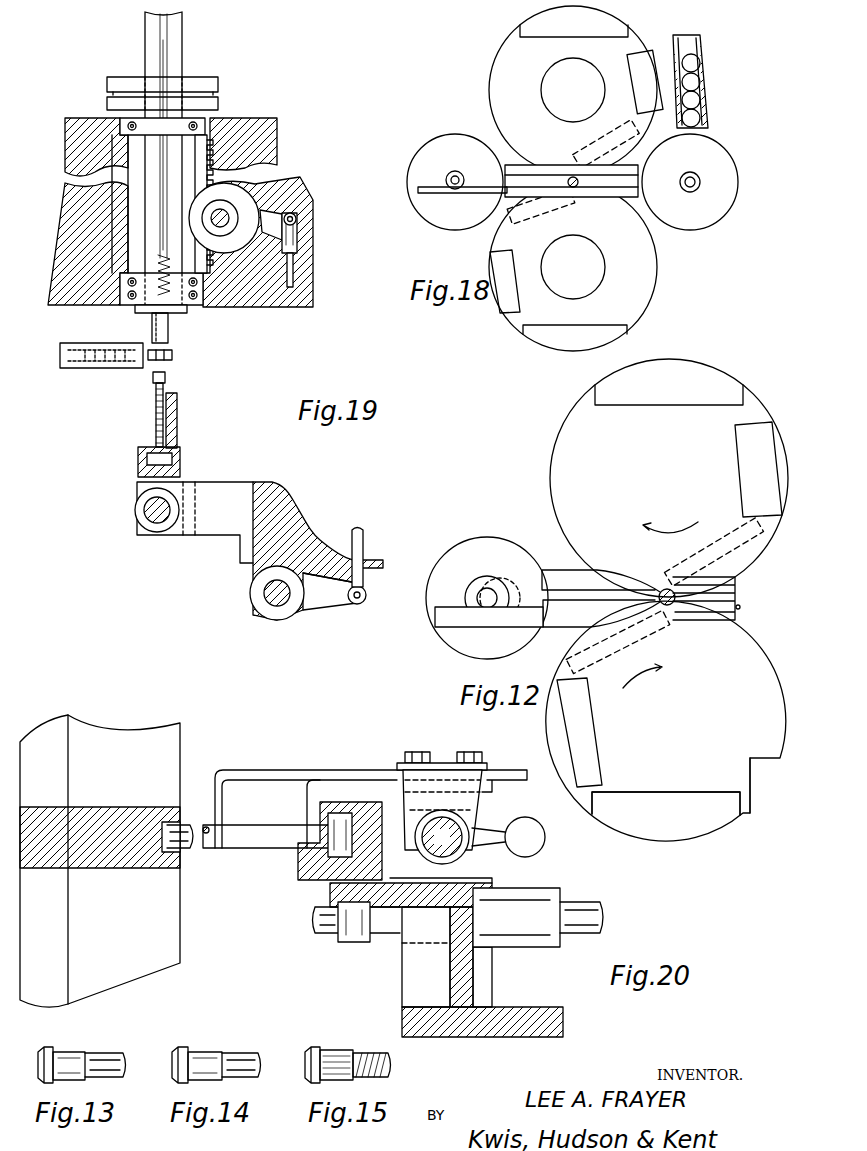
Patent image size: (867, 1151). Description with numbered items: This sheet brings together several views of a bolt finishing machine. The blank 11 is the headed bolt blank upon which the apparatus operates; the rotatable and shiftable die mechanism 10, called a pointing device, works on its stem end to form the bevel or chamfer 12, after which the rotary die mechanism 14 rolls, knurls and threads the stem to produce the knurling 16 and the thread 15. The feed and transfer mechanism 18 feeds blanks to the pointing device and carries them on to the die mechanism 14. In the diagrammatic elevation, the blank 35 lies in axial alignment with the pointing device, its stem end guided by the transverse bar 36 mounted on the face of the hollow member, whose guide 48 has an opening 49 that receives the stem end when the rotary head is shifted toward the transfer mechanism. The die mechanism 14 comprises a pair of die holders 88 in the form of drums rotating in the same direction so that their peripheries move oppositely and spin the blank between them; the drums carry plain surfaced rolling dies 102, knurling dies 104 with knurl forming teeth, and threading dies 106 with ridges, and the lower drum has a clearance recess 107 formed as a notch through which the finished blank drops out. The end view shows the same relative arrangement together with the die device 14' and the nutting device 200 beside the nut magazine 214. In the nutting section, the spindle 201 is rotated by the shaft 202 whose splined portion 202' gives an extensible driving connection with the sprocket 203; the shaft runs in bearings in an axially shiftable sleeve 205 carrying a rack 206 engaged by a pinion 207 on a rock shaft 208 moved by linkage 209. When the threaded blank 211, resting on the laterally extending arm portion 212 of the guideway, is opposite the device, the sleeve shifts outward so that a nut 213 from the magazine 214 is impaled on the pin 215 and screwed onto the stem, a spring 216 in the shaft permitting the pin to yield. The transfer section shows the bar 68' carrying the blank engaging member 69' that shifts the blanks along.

In FIG. 19, the splined portion 202' is at (231, 142).
In FIG. 19, the sprocket 203 is at (210, 84).
In FIG. 19, the rack 206 is at (210, 143).
In FIG. 19, the pinion 207 is at (222, 216).
In FIG. 19, the rock shaft 208 is at (262, 212).
In FIG. 19, the axially shiftable sleeve 205 is at (153, 238).
In FIG. 19, the shaft 202 is at (74, 204).
In FIG. 19, the nutting device 200 is at (57, 268).
In FIG. 18, the nutting device 200 is at (705, 147).
In FIG. 19, the magazine 214 is at (70, 345).
In FIG. 18, the magazine 214 is at (708, 78).
In FIG. 19, the spring 216 is at (122, 346).
In FIG. 19, the linkage 209 is at (293, 306).
In FIG. 19, the spindle 201 is at (168, 330).
In FIG. 19, the pin 215 is at (172, 355).
In FIG. 19, the nut 213 is at (165, 376).
In FIG. 19, the laterally extending arm portion 212 is at (177, 405).
In FIG. 19, the blank 211 is at (172, 426).
In FIG. 20, the blank 211 is at (280, 813).
In FIG. 19, the bar 68' is at (192, 493).
In FIG. 20, the bar 68' is at (480, 847).
In FIG. 18, the die device 14' is at (583, 178).
In FIG. 18, the die mechanism 10 is at (459, 127).
In FIG. 12, the die mechanism 10 is at (507, 537).
In FIG. 12, the rotary die mechanism 14 is at (658, 600).
In FIG. 20, the rotary die mechanism 14 is at (123, 861).
In FIG. 12, the die holders 88 is at (743, 387).
In FIG. 12, the knurling dies 104 is at (768, 430).
In FIG. 12, the rolling dies 102 is at (715, 551).
In FIG. 12, the blank 35 is at (667, 590).
In FIG. 12, the transverse bar 36 is at (447, 617).
In FIG. 12, the opening 49 is at (487, 600).
In FIG. 12, the guide 48 is at (520, 597).
In FIG. 12, the threading dies 106 is at (605, 380).
In FIG. 12, the clearance recess 107 is at (760, 780).
In FIG. 20, the blank engaging member 69' is at (371, 800).
In FIG. 20, the feed and transfer mechanism 18 is at (397, 764).
In FIG. 13, the blank 11 is at (112, 1053).
In FIG. 14, the bevel or chamfer 12 is at (258, 1053).
In FIG. 15, the knurling 16 is at (339, 1053).
In FIG. 15, the thread 15 is at (385, 1043).